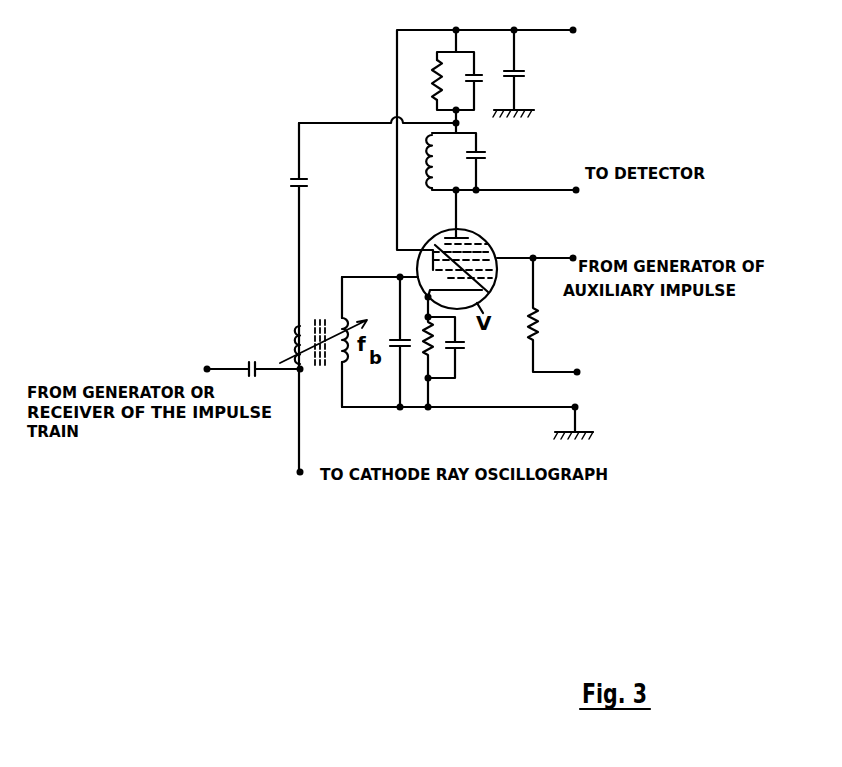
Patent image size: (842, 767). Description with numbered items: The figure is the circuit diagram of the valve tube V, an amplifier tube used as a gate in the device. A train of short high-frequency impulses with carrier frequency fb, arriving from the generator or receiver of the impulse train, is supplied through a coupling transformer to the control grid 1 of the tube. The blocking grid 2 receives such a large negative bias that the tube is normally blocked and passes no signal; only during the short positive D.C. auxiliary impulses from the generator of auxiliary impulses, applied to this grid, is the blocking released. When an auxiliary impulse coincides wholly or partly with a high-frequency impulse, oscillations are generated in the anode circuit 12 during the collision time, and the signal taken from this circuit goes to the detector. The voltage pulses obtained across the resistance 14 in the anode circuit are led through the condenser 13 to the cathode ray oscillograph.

The control grid 1 is at (483, 278).
The blocking grid 2 is at (488, 257).
The anode circuit 12 is at (480, 143).
The condenser 13 is at (359, 294).
The resistance 14 is at (443, 81).